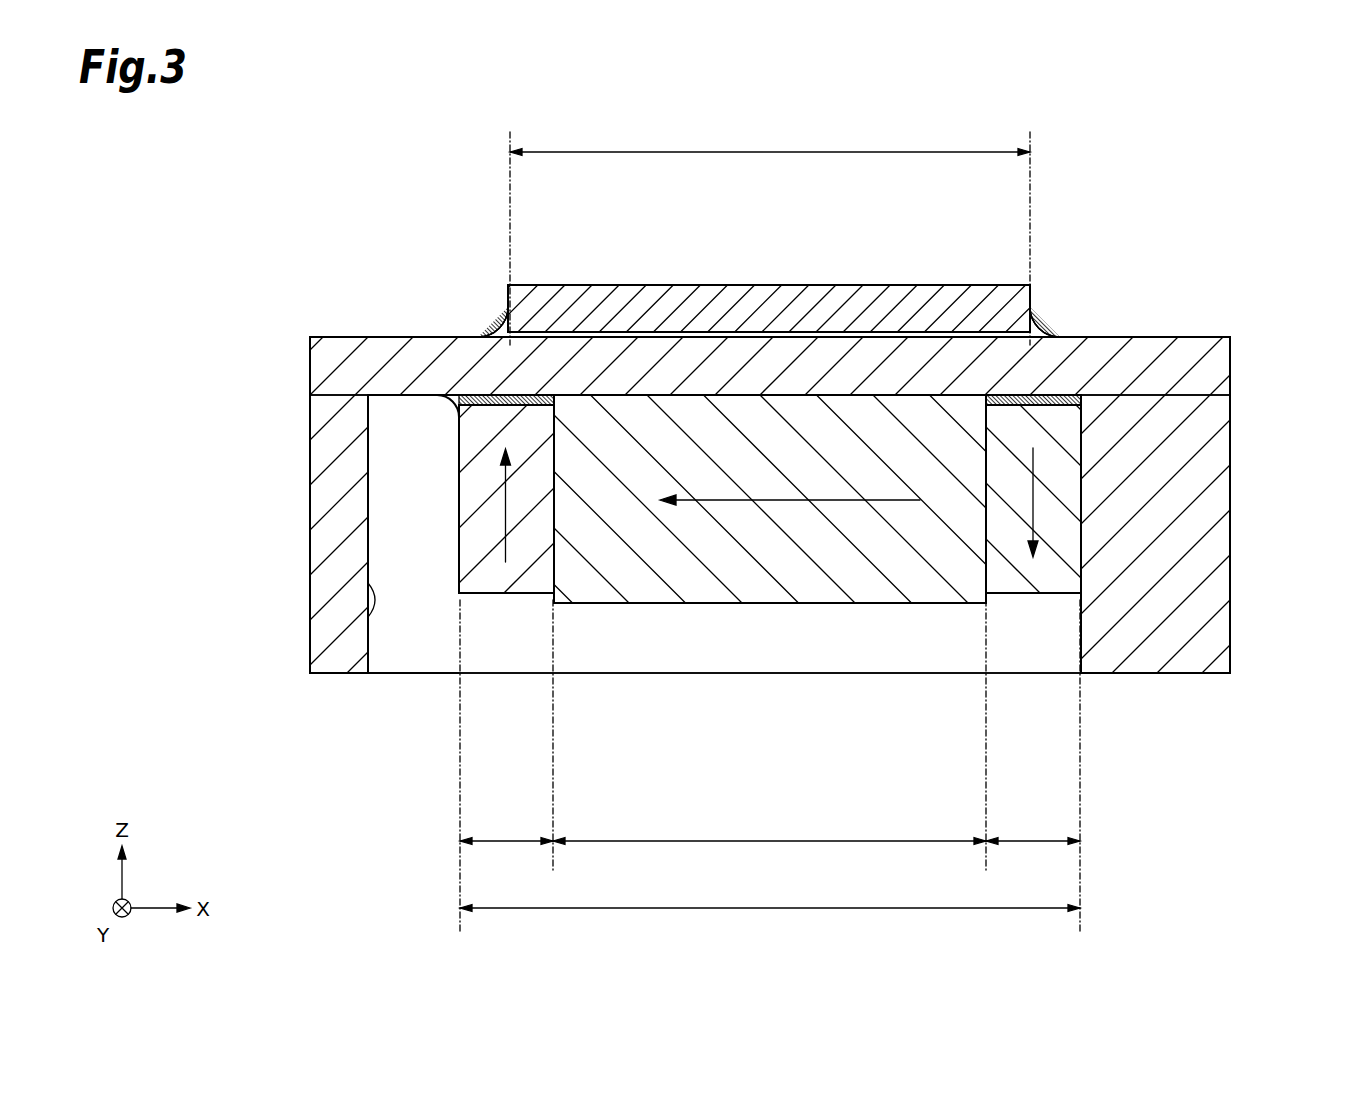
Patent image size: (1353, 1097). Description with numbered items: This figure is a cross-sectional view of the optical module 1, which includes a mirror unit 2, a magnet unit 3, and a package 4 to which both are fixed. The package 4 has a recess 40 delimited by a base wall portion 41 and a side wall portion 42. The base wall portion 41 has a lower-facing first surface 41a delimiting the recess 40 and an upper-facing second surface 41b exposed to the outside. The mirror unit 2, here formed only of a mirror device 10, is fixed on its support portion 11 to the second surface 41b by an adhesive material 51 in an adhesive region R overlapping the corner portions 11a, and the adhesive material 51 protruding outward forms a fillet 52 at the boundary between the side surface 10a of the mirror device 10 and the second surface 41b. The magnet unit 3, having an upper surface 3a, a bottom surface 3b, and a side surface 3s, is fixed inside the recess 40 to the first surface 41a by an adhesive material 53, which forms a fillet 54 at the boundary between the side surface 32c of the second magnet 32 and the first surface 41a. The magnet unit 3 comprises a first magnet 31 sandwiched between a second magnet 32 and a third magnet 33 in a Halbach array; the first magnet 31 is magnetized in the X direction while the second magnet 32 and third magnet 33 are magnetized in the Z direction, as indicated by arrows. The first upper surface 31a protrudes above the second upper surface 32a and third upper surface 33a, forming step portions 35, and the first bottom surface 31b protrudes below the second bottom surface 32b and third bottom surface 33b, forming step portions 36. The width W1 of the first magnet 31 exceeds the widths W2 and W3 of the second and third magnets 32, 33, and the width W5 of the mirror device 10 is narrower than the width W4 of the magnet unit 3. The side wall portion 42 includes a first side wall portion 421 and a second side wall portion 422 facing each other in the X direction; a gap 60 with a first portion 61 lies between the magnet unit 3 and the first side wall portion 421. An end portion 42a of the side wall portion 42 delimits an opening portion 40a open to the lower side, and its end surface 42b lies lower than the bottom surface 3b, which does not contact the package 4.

The optical module 1 is at (1226, 203).
The mirror unit 2 is at (769, 308).
The magnet unit 3 is at (714, 605).
The upper surface 3a is at (728, 393).
The bottom surface 3b is at (790, 605).
The side surface 3s is at (1082, 508).
The package 4 is at (1225, 592).
The mirror device 10 is at (790, 307).
The side surface 10a is at (1031, 318).
The support portion 11 is at (862, 307).
The corner portions 11a is at (510, 325).
The first magnet 31 is at (876, 578).
The first upper surface 31a is at (920, 393).
The first bottom surface 31b is at (920, 605).
The second magnet 32 is at (505, 597).
The second upper surface 32a is at (520, 393).
The second bottom surface 32b is at (482, 597).
The side surface 32c is at (458, 478).
The third magnet 33 is at (1032, 597).
The third upper surface 33a is at (1082, 395).
The third bottom surface 33b is at (1067, 597).
The step portions 35 is at (520, 390).
The step portions 36 is at (543, 614).
The recess 40 is at (323, 620).
The opening portion 40a is at (368, 637).
The base wall portion 41 is at (622, 360).
The first surface 41a is at (640, 605).
The second surface 41b is at (670, 335).
The side wall portion 42 is at (320, 580).
The end portion 42a is at (332, 655).
The end surface 42b is at (340, 675).
The adhesive material 51 is at (490, 335).
The fillet 52 is at (500, 322).
The adhesive material 53 is at (540, 392).
The fillet 54 is at (457, 408).
The gap 60 is at (402, 534).
The first portion 61 is at (367, 537).
The first side wall portion 421 is at (328, 507).
The second side wall portion 422 is at (1215, 500).
The adhesive region R is at (530, 313).
The width of the first magnet W1 is at (766, 843).
The width of the second magnet W2 is at (505, 843).
The width of the third magnet W3 is at (1028, 843).
The width of the magnet unit W4 is at (766, 910).
The width of the mirror device W5 is at (780, 150).